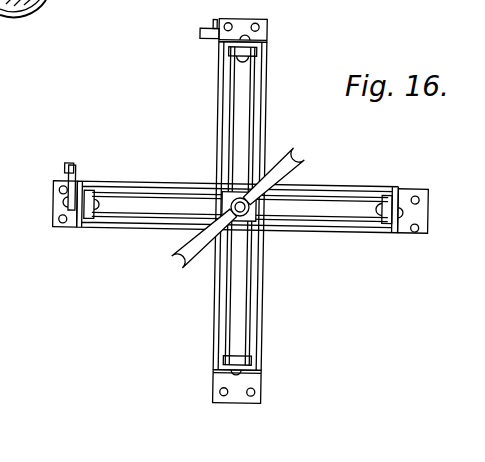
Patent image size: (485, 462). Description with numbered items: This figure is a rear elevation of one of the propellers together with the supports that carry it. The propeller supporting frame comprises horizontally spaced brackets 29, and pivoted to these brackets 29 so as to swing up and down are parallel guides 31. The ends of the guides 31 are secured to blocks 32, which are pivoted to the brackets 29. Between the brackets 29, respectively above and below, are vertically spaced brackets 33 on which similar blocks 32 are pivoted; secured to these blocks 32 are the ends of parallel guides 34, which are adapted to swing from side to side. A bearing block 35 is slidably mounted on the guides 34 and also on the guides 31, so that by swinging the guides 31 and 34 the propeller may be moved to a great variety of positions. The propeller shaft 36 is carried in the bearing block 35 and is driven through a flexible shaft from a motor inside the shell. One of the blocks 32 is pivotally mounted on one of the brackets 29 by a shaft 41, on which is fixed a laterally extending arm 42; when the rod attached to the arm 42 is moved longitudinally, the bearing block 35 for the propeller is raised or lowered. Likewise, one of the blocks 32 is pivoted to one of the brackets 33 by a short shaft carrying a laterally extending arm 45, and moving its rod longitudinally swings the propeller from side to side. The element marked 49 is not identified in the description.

The brackets 29 is at (422, 193).
The parallel guides 31 is at (350, 196).
The blocks 32 is at (250, 54).
The vertically spaced brackets 33 is at (262, 44).
The parallel guides 34 is at (256, 206).
The bearing block 35 is at (258, 223).
The propeller shaft 36 is at (291, 183).
The shaft 41 is at (62, 202).
The laterally extending arm 42 is at (76, 181).
The laterally extending arm 45 is at (212, 28).
The dome stop 49 is at (243, 34).